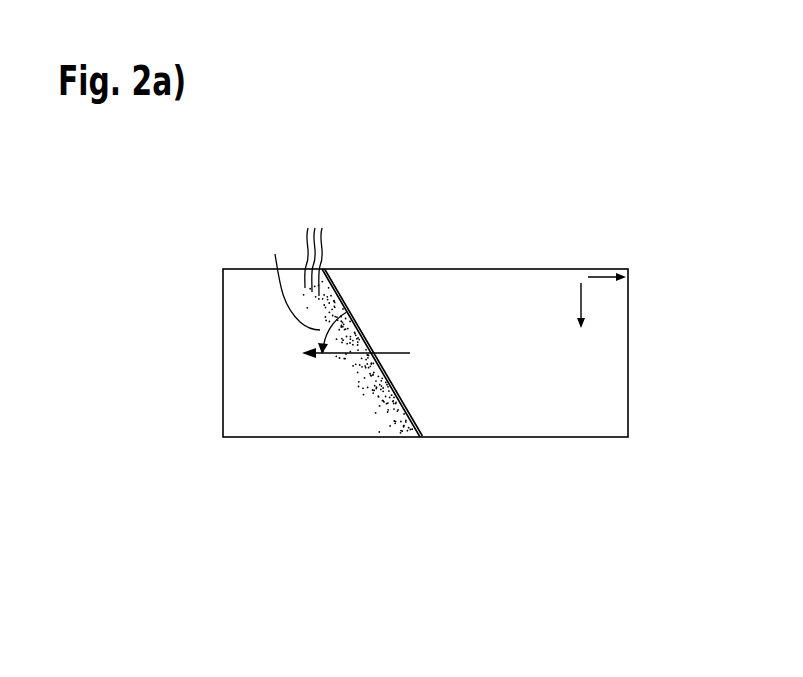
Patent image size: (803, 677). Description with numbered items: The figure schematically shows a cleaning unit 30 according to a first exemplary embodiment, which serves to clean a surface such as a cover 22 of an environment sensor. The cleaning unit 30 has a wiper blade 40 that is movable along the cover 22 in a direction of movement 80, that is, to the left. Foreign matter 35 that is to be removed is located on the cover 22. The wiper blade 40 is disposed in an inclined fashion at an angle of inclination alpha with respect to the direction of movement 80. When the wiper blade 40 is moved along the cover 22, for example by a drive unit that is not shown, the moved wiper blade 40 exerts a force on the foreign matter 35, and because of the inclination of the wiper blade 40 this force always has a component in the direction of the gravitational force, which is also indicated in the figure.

The cleaning unit 30 is at (198, 226).
The cover 22 is at (497, 288).
The foreign matter 35 is at (313, 247).
The wiper blade 40 is at (420, 438).
The direction of movement 80 is at (398, 350).